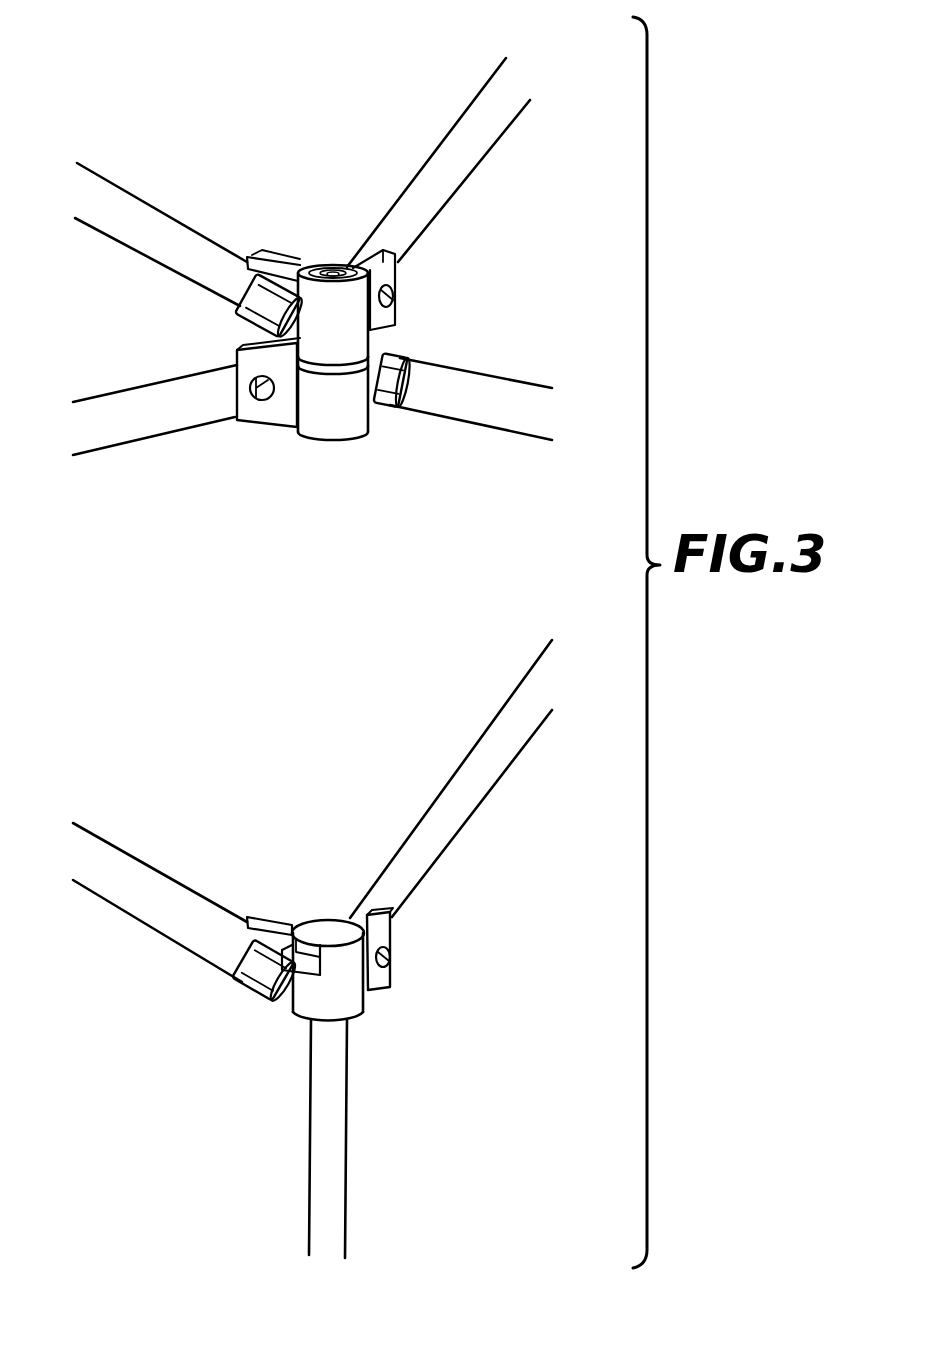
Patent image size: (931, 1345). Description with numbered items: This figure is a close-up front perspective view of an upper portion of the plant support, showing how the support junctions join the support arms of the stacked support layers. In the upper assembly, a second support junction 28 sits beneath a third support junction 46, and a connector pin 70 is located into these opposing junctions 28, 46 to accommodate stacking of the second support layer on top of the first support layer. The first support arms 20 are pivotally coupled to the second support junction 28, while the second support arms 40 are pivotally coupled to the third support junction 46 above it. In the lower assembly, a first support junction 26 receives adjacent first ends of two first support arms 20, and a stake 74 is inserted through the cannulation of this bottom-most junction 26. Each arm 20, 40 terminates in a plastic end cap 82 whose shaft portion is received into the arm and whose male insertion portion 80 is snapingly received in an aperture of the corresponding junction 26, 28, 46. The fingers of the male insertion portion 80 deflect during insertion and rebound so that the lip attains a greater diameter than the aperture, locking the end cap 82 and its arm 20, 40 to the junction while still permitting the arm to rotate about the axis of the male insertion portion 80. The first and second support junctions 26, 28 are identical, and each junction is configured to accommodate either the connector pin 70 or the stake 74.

The first support arms 20 is at (138, 400).
The first support junction 26 is at (317, 1000).
The second support junction 28 is at (317, 425).
The second support arms 40 is at (146, 222).
The third support junction 46 is at (355, 322).
The connector pin 70 is at (327, 271).
The stake 74 is at (325, 1099).
The male insertion portion 80 is at (398, 294).
The end cap 82 is at (250, 318).